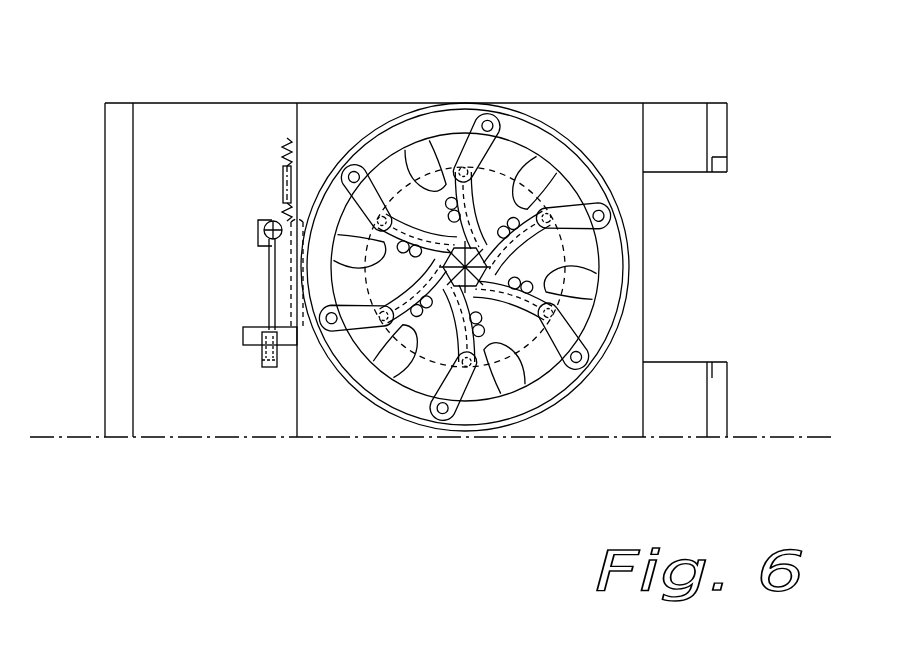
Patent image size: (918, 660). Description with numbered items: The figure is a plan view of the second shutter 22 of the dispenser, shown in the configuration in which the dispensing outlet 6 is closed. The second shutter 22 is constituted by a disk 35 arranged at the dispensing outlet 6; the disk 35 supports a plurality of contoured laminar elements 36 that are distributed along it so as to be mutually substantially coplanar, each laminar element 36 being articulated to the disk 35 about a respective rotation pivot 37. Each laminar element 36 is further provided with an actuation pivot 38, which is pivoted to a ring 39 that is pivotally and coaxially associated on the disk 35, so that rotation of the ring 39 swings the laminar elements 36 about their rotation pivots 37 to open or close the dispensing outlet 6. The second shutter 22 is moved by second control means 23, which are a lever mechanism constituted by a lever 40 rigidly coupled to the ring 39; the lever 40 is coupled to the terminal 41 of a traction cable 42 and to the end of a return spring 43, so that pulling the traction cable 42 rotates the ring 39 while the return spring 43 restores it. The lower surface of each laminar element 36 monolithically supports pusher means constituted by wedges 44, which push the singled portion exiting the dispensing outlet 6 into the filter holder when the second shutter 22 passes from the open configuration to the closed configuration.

The dispensing outlet 6 is at (540, 372).
The second shutter 22 is at (632, 291).
The second control means 23 is at (244, 258).
The disk 35 is at (587, 250).
The contoured laminar element 36 is at (513, 178).
The rotation pivot 37 is at (463, 168).
The actuation pivot 38 is at (497, 117).
The ring 39 is at (606, 327).
The lever 40 is at (256, 235).
The terminal 41 is at (266, 221).
The traction cable 42 is at (267, 298).
The return spring 43 is at (283, 188).
The wedge 44 is at (547, 212).